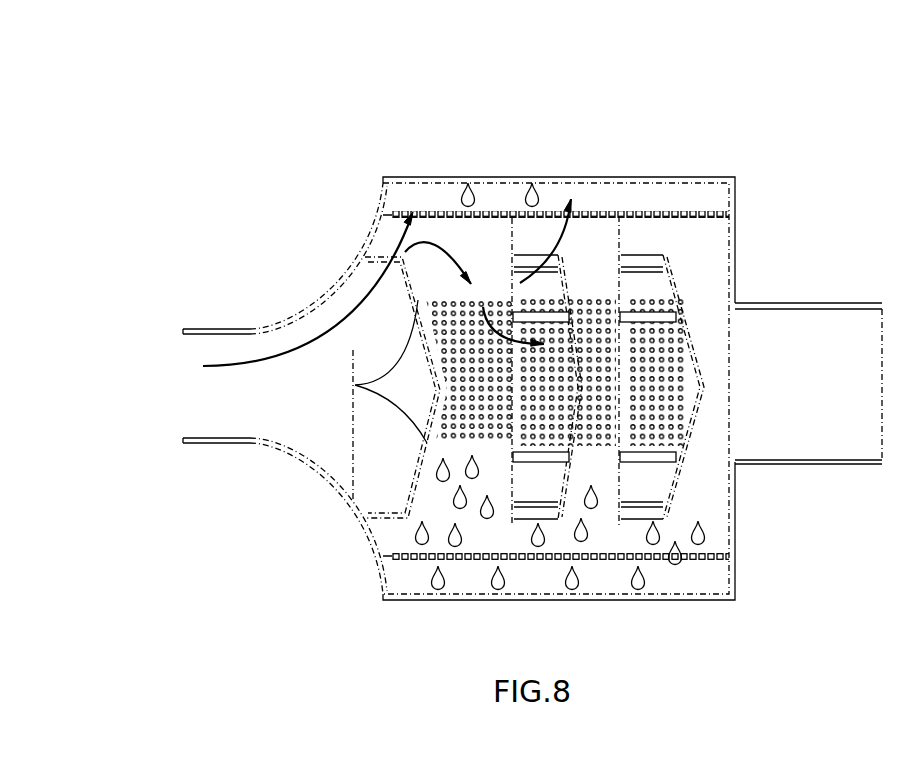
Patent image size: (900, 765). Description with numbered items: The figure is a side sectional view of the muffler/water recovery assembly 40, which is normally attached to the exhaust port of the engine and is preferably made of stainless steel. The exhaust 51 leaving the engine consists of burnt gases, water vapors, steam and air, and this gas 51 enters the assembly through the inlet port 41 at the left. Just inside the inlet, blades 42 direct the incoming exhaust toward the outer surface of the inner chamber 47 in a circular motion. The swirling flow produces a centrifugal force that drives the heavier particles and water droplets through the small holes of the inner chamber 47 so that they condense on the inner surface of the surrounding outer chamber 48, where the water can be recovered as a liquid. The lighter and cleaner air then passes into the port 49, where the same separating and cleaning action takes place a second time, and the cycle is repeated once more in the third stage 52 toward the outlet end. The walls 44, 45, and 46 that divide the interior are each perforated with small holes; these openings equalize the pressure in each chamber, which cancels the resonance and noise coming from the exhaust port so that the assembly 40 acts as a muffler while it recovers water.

The muffler/water recovery assembly 40 is at (578, 178).
The inlet port 41 is at (195, 398).
The blades 42 is at (408, 415).
The wall 44 is at (415, 287).
The wall 45 is at (568, 283).
The wall 46 is at (670, 277).
The inner chamber 47 is at (457, 232).
The outer chamber 48 is at (437, 192).
The port 49 is at (598, 525).
The exhaust 51 is at (328, 338).
The third stage 52 is at (673, 342).